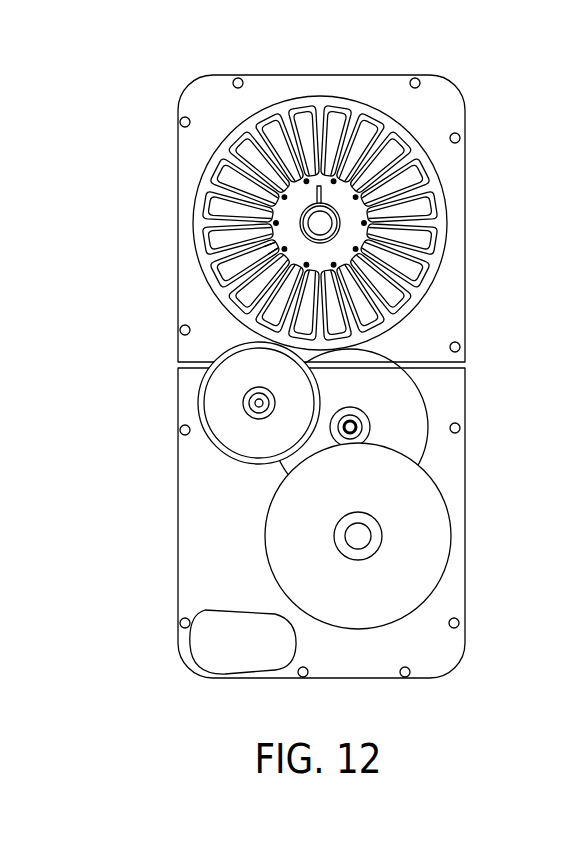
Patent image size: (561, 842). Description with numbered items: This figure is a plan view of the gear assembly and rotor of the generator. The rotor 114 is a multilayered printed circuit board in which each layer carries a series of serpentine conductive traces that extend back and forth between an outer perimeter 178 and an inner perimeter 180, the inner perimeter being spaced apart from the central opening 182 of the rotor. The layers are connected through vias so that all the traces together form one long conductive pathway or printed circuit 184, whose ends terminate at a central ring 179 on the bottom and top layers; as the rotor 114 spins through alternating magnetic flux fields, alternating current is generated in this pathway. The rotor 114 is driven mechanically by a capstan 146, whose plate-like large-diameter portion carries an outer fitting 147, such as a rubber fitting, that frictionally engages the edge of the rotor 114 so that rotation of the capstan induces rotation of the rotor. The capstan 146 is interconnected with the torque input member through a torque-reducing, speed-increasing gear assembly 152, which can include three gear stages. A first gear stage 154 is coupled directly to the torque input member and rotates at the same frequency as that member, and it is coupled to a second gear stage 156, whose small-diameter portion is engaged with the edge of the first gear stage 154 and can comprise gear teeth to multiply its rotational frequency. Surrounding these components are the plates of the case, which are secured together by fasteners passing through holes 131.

The rotor 114 is at (325, 192).
The holes 131 is at (462, 134).
The capstan 146 is at (230, 407).
The outer fitting 147 is at (203, 442).
The gear assembly 152 is at (270, 480).
The first gear stage 154 is at (452, 538).
The second gear stage 156 is at (427, 401).
The outer perimeter 178 is at (213, 278).
The central ring 179 is at (298, 215).
The inner perimeter 180 is at (275, 245).
The central opening 182 is at (337, 222).
The printed circuit 184 is at (319, 185).